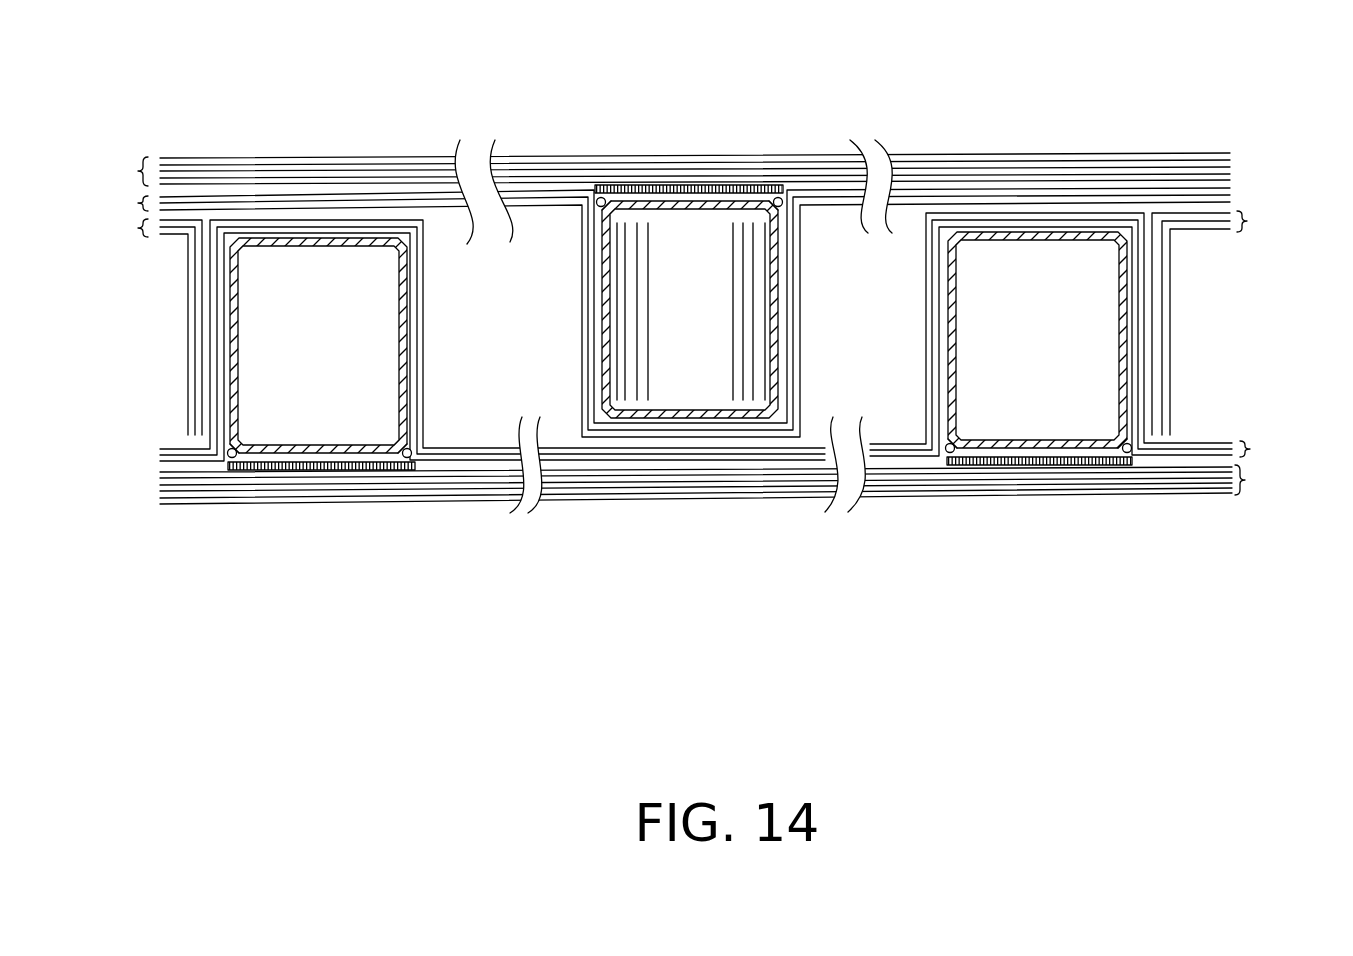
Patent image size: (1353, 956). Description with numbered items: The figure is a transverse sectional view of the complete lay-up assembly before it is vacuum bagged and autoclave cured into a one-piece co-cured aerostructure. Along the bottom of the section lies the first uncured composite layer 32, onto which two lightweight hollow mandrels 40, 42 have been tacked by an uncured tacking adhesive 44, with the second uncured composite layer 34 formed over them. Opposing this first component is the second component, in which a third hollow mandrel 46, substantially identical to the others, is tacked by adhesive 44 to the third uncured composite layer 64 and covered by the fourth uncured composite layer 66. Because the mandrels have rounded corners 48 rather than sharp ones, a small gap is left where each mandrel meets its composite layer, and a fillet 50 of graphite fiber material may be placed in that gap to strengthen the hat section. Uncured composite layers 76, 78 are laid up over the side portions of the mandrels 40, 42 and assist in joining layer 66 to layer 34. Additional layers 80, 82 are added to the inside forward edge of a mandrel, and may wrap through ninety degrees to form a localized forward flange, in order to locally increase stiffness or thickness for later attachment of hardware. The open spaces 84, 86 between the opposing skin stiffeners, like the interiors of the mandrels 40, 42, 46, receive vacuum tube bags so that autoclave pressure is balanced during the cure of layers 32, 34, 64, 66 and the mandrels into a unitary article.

The first uncured composite layer 32 is at (1247, 480).
The second uncured composite layer 34 is at (426, 340).
The hollow mandrel 40 is at (305, 246).
The hollow mandrel 42 is at (1017, 440).
The tacking adhesive 44 is at (700, 186).
The hollow mandrel 46 is at (667, 410).
The rounded corners 48 is at (640, 210).
The fillet 50 is at (597, 198).
The uncured composite layer 64 is at (136, 171).
The uncured composite layer 66 is at (137, 204).
The uncured composite layer 76 is at (137, 228).
The uncured composite layer 78 is at (1249, 221).
The layer 80 is at (649, 267).
The layer 82 is at (734, 320).
The open space 84 is at (897, 414).
The open space 86 is at (487, 142).